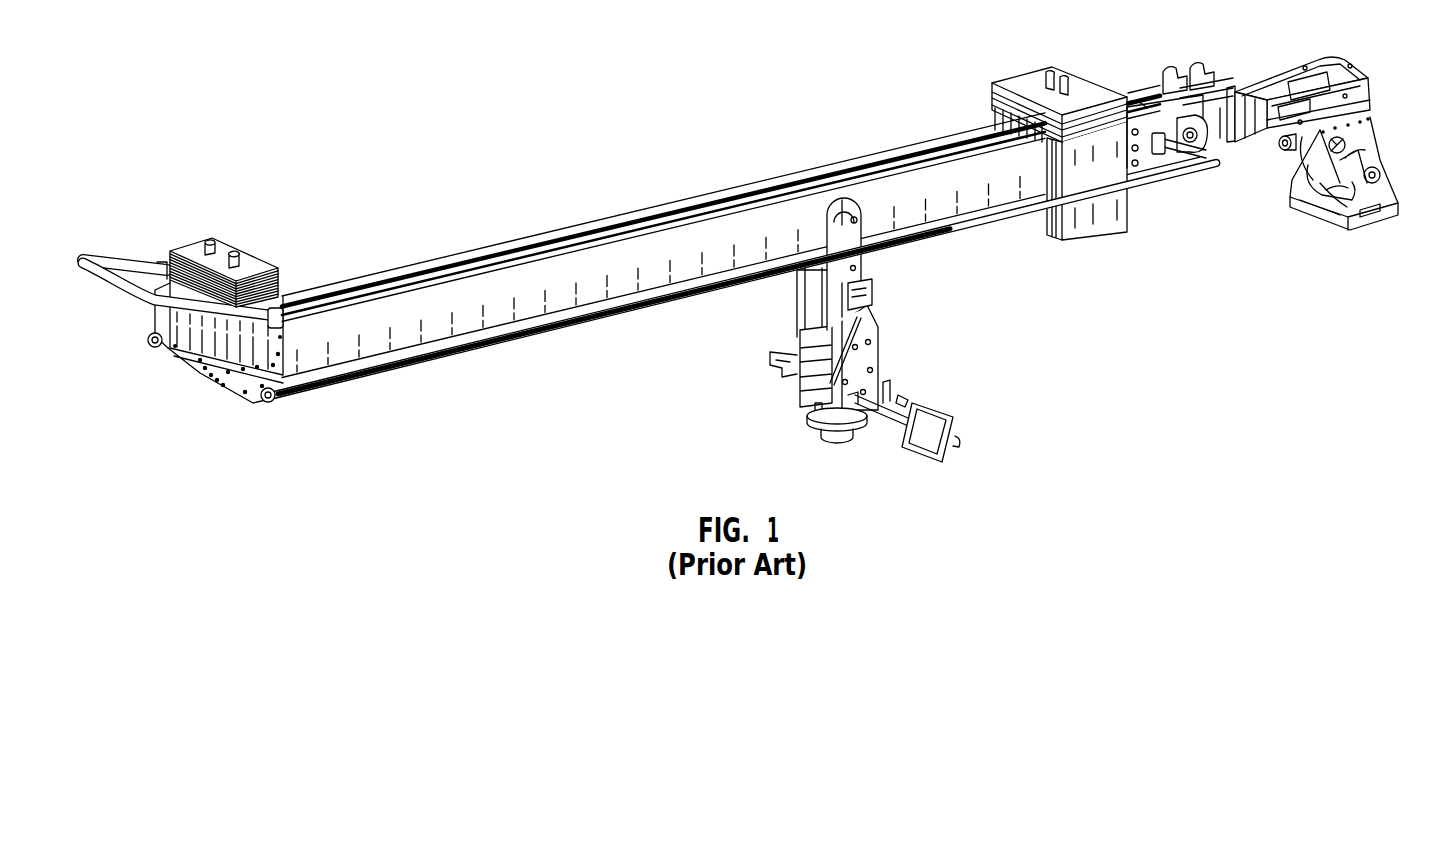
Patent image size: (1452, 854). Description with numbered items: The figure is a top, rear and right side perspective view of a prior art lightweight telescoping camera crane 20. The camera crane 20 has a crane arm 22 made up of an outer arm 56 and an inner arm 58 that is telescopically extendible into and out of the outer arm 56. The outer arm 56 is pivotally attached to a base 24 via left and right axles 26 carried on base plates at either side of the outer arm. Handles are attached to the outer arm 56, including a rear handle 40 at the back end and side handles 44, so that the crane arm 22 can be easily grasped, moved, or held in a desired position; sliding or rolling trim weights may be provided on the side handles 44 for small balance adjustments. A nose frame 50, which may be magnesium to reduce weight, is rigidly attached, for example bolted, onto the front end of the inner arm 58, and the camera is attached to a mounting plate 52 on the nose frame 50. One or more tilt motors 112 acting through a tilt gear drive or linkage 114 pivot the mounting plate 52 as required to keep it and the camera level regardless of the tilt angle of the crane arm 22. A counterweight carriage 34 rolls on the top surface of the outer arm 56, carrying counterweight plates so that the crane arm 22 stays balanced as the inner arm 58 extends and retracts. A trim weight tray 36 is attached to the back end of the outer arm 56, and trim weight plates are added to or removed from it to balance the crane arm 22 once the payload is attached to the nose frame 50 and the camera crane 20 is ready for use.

The camera crane 20 is at (630, 192).
The crane arm 22 is at (727, 186).
The base 24 is at (884, 354).
The axles 26 is at (852, 200).
The counterweight carriage 34 is at (1090, 76).
The trim weight tray 36 is at (217, 296).
The rear handle 40 is at (123, 262).
The side handles 44 is at (933, 228).
The nose frame 50 is at (1324, 50).
The mounting plate 52 is at (1360, 224).
The outer arm 56 is at (445, 322).
The inner arm 58 is at (1226, 161).
The tilt motors 112 is at (1306, 137).
The tilt gear drive or linkage 114 is at (1350, 142).